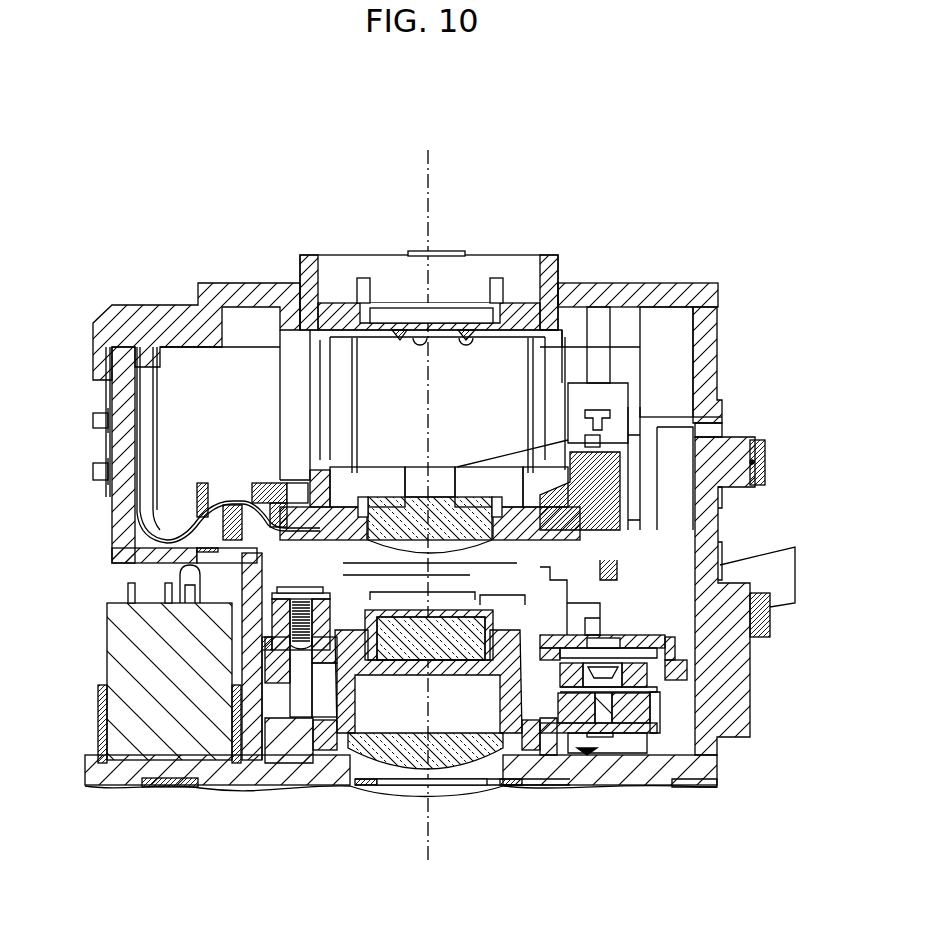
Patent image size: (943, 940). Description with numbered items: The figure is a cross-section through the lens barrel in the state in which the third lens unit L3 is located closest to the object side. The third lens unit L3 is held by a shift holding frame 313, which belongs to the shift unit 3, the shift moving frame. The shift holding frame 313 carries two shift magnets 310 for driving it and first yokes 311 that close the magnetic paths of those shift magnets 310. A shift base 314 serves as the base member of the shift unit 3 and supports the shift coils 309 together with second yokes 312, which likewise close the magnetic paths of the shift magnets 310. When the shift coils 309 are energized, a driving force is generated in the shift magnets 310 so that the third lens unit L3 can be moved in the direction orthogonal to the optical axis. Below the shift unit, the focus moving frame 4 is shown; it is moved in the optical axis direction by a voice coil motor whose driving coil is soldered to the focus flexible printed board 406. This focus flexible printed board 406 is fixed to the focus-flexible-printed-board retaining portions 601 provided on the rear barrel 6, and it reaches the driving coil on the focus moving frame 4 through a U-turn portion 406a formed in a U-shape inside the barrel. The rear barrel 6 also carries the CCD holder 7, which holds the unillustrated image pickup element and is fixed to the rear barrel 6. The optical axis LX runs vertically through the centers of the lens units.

The optical axis LX is at (429, 160).
The CCD holder 7 is at (686, 291).
The focus flexible printed board 406 is at (217, 513).
The U-turn portion 406a is at (172, 540).
The focus-flexible-printed-board retaining portions 601 is at (93, 471).
The rear barrel 6 is at (118, 509).
The focus moving frame 4 is at (252, 540).
The shift unit 3 is at (265, 677).
The shift base 314 is at (270, 651).
The third lens unit L3 is at (458, 760).
The shift holding frame 313 is at (310, 740).
The second yokes 312 is at (658, 637).
The shift coils 309 is at (645, 681).
The shift magnets 310 is at (613, 724).
The first yokes 311 is at (635, 726).